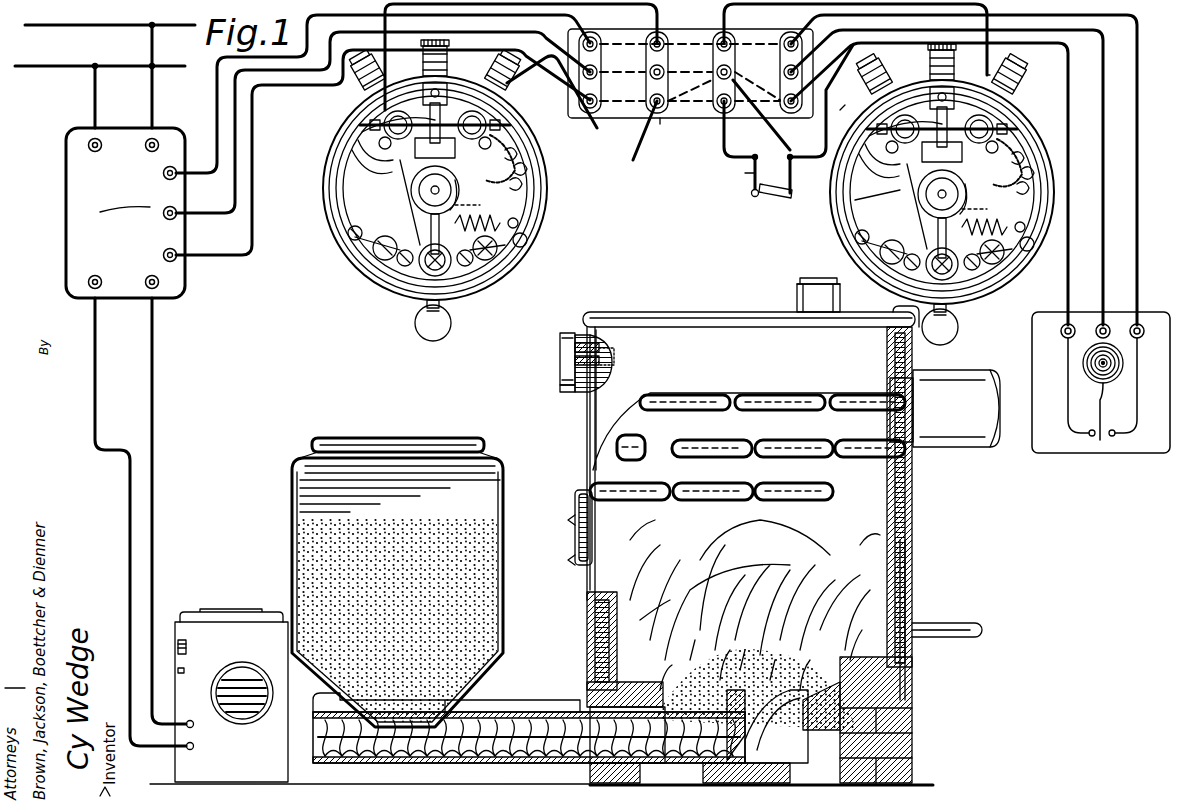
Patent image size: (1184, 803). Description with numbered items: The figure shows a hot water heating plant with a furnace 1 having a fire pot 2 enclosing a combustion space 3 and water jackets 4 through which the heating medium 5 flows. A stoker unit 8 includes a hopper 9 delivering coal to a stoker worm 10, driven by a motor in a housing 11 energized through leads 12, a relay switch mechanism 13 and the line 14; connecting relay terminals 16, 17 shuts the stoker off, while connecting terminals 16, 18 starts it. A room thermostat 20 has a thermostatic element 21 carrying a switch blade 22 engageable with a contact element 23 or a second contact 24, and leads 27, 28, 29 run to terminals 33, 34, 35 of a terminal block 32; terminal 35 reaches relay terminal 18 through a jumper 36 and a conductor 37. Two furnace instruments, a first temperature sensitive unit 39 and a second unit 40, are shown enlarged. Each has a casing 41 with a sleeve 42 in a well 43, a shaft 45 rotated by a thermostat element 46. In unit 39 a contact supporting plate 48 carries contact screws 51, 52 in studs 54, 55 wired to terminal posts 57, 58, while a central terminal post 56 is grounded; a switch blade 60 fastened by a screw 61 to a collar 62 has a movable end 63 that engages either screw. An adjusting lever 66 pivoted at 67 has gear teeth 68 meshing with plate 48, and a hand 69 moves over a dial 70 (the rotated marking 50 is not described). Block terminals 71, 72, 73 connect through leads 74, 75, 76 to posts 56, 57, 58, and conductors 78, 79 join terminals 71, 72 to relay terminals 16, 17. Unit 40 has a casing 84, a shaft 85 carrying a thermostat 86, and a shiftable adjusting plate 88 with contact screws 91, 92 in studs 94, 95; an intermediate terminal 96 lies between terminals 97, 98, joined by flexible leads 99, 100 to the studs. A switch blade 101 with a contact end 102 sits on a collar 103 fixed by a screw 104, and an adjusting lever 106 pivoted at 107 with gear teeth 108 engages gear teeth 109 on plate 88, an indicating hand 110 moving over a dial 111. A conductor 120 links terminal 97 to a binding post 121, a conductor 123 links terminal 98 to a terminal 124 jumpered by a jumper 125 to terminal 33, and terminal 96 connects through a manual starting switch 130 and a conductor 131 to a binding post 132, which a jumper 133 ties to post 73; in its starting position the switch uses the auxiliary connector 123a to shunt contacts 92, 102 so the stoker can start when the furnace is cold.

The furnace 1 is at (579, 495).
The fire pot 2 is at (913, 648).
The combustion space 3 is at (903, 548).
The water jackets 4 is at (680, 490).
The heating medium 5 is at (788, 440).
The stoker unit 8 is at (282, 574).
The hopper 9 is at (306, 478).
The stoker worm 10 is at (482, 770).
The housing 11 is at (178, 645).
The leads 12 is at (150, 488).
The relay switch mechanism 13 is at (60, 278).
The line 14 is at (105, 76).
The relay terminal 16 is at (177, 209).
The relay terminal 17 is at (172, 167).
The relay terminal 18 is at (173, 261).
The room thermostat 20 is at (1050, 453).
The thermostatic element 21 is at (1082, 371).
The switch blade 22 is at (1100, 444).
The contact element 23 is at (1114, 437).
The contact 24 is at (1090, 437).
The lead 27 is at (1099, 146).
The lead 28 is at (1135, 170).
The lead 29 is at (1060, 252).
The terminal block 32 is at (675, 32).
The terminal 33 is at (777, 66).
The terminal 34 is at (790, 36).
The terminal 35 is at (793, 110).
The jumper 36 is at (670, 131).
The conductor 37 is at (250, 242).
The first temperature sensitive unit 39 is at (316, 205).
The second temperature sensitive unit 40 is at (564, 356).
The instrument casing 41 is at (326, 220).
The sleeve or shank 42 is at (596, 345).
The well 43 is at (612, 352).
The shaft 45 is at (440, 190).
The thermostat element 46 is at (659, 355).
The contact supporting plate 48 is at (435, 139).
The lever 50 is at (370, 160).
The contact screw 51 is at (360, 124).
The contact screw 52 is at (500, 150).
The stud 54 is at (372, 110).
The stud 55 is at (470, 118).
The central terminal post 56 is at (420, 58).
The terminal post 57 is at (364, 66).
The terminal post 58 is at (510, 72).
The switch blade 60 is at (449, 190).
The screw 61 is at (376, 253).
The collar 62 is at (398, 262).
The movable end 63 is at (425, 118).
The adjusting lever 66 is at (430, 342).
The pivot 67 is at (452, 272).
The gear teeth 68 is at (492, 262).
The hand 69 is at (425, 270).
The dial 70 is at (348, 230).
The terminal 71 is at (650, 68).
The terminal 72 is at (652, 38).
The terminal 73 is at (652, 110).
The lead 74 is at (558, 103).
The lead 75 is at (580, 26).
The lead 76 is at (640, 160).
The conductor 78 is at (237, 147).
The conductor 79 is at (216, 107).
The casing 84 is at (835, 246).
The shaft 85 is at (948, 194).
The thermostat 86 is at (994, 217).
The shiftable adjusting plate member 88 is at (922, 170).
The contact screw 91 is at (1010, 128).
The contact screw 92 is at (862, 160).
The stud 94 is at (995, 120).
The stud 95 is at (906, 118).
The intermediate terminal 96 is at (955, 61).
The terminal 97 is at (1020, 78).
The terminal 98 is at (821, 101).
The flexible lead 99 is at (1020, 150).
The flexible lead 100 is at (858, 180).
The switch blade 101 is at (1000, 160).
The contact end 102 is at (945, 120).
The collar 103 is at (898, 264).
The screw 104 is at (852, 266).
The adjusting lever 106 is at (944, 342).
The pivot 107 is at (950, 275).
The gear teeth 108 is at (980, 268).
The gear teeth 109 is at (1000, 260).
The indicating hand 110 is at (922, 300).
The dial 111 is at (857, 202).
The conductor 120 is at (992, 62).
The binding post 121 is at (716, 60).
The conductor 123 is at (840, 103).
The auxiliary connector 123a is at (752, 178).
The terminal 124 is at (720, 110).
The jumper 125 is at (760, 90).
The starting switch 130 is at (770, 194).
The conductor 131 is at (752, 192).
The binding post 132 is at (717, 72).
The jumper 133 is at (690, 76).